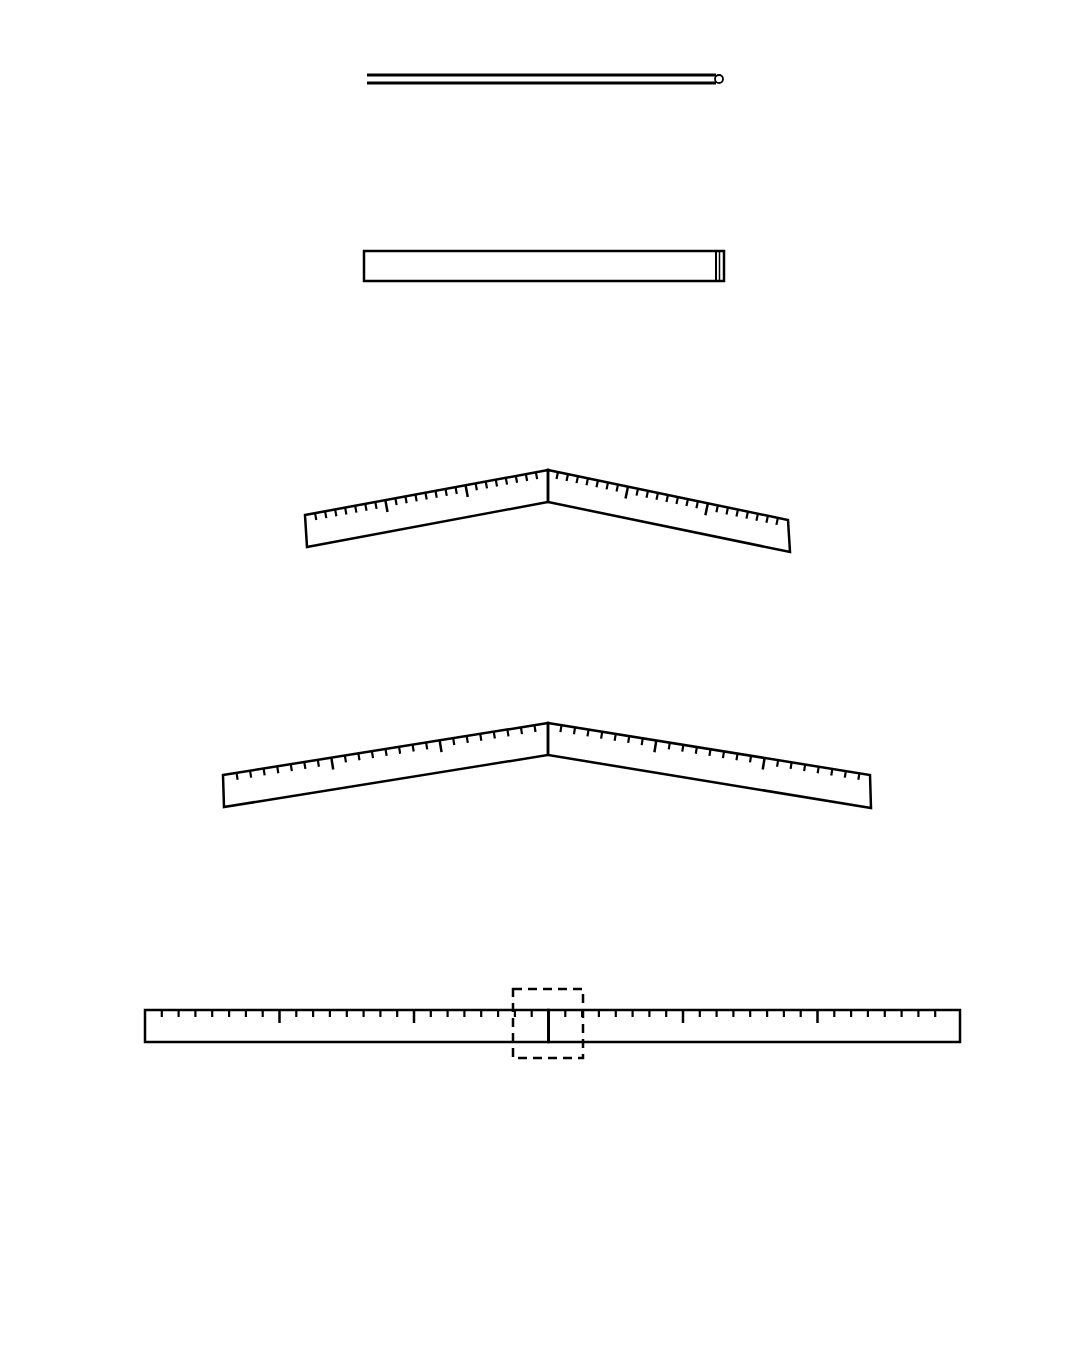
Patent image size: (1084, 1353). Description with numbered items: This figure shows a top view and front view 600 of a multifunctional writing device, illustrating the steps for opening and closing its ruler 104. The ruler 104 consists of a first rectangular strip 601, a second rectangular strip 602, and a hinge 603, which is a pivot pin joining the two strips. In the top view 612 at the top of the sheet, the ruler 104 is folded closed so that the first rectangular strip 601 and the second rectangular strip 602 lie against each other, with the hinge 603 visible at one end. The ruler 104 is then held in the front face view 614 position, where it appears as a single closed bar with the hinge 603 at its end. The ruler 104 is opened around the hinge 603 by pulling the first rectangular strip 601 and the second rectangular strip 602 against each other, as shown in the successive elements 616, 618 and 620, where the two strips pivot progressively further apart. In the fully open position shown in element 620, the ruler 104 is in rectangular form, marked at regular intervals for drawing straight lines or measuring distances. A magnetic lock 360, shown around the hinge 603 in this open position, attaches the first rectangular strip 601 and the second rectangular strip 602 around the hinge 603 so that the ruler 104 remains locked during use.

The top view and front view 600 is at (113, 1128).
The ruler 104 is at (328, 79).
The first rectangular strip 601 is at (680, 92).
The second rectangular strip 602 is at (682, 68).
The hinge 603 is at (727, 79).
The top view 612 is at (567, 122).
The front face view 614 is at (567, 317).
The element 616 is at (567, 566).
The element 618 is at (567, 834).
The element 620 is at (568, 1107).
The magnetic lock 360 is at (577, 985).